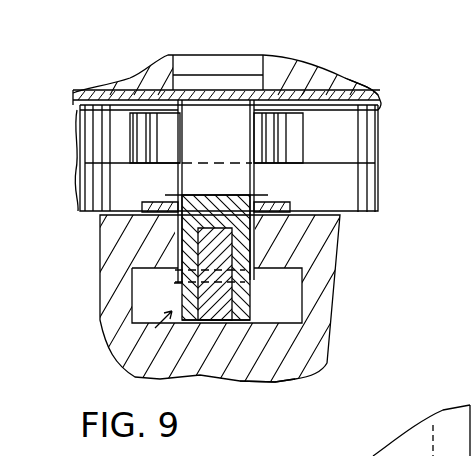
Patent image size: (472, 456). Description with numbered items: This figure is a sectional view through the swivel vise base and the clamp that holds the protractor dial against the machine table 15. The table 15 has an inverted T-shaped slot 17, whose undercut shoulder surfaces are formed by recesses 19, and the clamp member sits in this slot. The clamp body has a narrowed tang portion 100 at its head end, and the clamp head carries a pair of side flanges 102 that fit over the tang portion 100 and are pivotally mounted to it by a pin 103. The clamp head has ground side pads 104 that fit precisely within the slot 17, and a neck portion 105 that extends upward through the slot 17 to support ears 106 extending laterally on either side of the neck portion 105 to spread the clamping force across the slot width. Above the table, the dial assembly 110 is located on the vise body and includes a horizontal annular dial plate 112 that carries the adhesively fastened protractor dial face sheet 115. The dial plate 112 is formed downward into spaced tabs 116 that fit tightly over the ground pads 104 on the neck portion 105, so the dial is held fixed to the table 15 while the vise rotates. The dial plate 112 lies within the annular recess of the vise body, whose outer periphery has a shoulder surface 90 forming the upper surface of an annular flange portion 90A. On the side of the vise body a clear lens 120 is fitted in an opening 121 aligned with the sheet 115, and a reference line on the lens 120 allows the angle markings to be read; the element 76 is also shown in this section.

The clear lens 120 is at (199, 62).
The opening 121 is at (233, 83).
The dial assembly 110 is at (75, 100).
The cap rim 76 is at (357, 88).
The protractor dial face sheet 115 is at (380, 97).
The dial plate section 112 is at (373, 110).
The shoulder surface 90 is at (338, 163).
The flange portion 90A is at (372, 193).
The ears 106 is at (140, 150).
The tabs 116 is at (138, 207).
The neck portion 105 is at (232, 190).
The side pads 104 is at (176, 236).
The side flanges 102 is at (198, 292).
The pin 103 is at (292, 268).
The recesses 19 is at (292, 318).
The table 15 is at (305, 353).
The tang portion 100 is at (277, 382).
The slot 17 is at (112, 353).